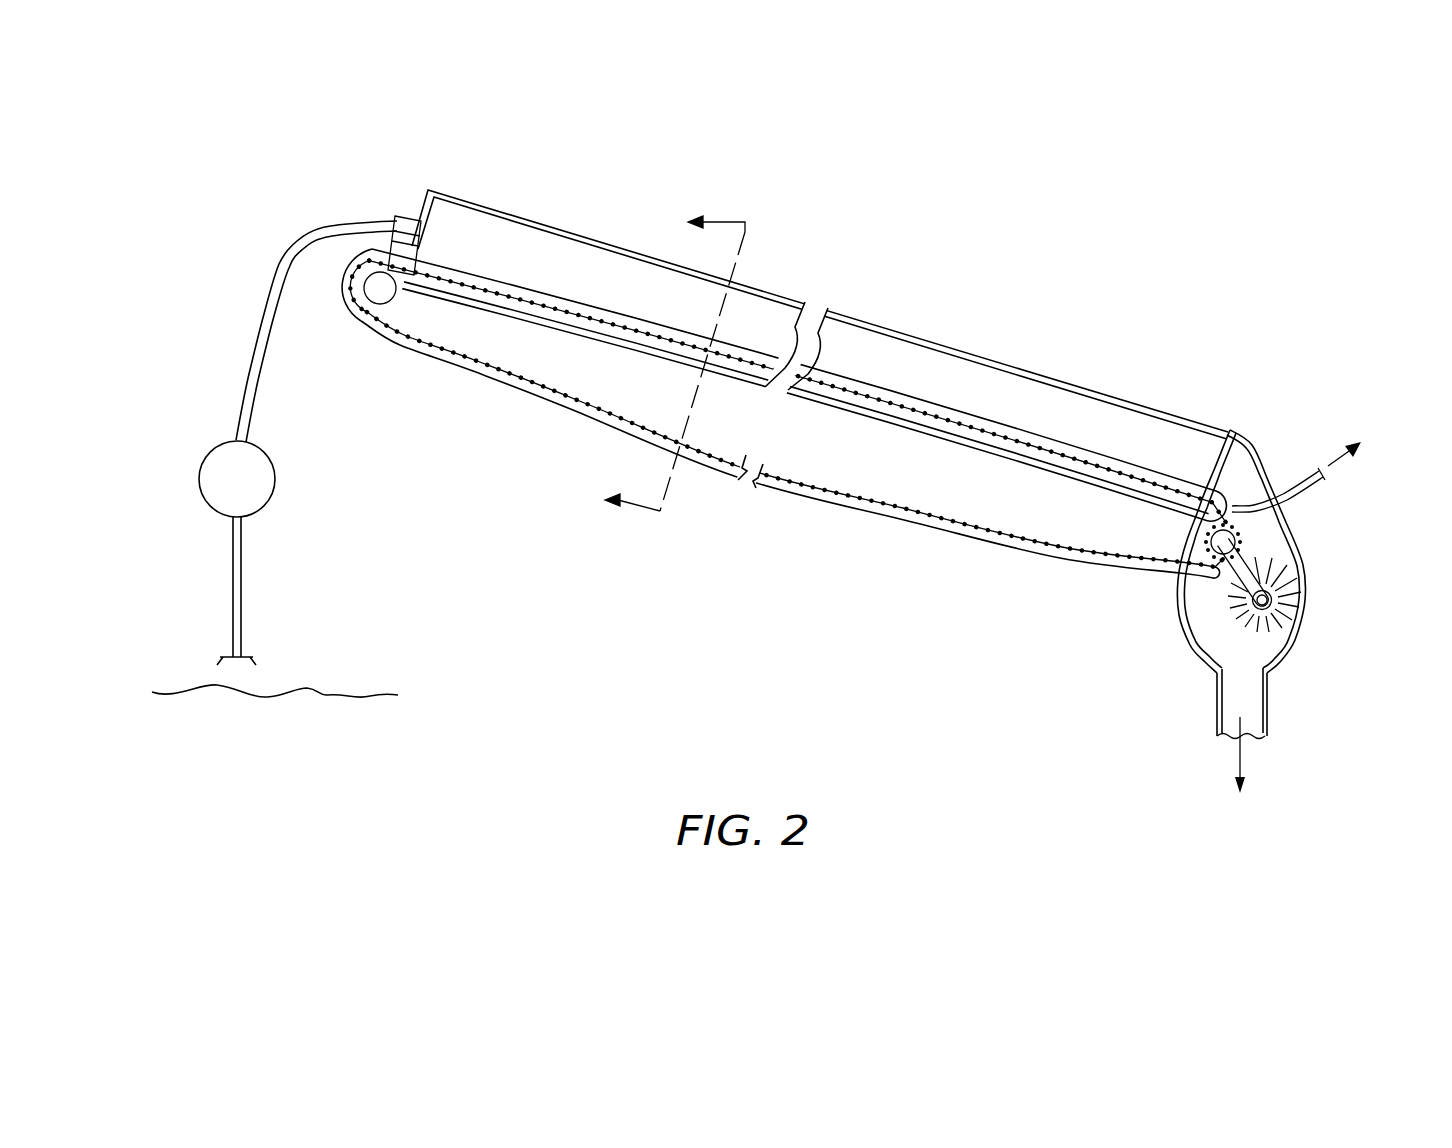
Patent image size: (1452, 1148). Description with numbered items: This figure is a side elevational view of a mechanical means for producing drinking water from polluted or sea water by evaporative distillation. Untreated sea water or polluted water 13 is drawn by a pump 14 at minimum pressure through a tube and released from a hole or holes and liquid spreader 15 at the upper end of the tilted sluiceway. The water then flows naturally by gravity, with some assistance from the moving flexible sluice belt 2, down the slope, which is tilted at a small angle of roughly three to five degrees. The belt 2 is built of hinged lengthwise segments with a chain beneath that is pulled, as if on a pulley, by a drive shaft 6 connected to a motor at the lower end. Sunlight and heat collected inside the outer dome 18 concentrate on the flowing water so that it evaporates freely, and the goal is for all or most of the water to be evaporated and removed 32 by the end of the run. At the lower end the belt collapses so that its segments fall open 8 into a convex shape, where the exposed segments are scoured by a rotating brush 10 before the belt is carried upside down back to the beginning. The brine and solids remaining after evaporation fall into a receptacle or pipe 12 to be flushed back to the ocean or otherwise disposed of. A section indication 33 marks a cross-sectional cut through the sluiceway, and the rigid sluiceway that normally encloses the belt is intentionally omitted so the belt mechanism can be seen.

The flexible sluice belt 2 is at (973, 423).
The drive shaft 6 is at (1222, 542).
The fallen-open belt segments 8 is at (1260, 542).
The rotating brush 10 is at (1300, 600).
The receptacle or pipe 12 is at (1230, 653).
The untreated sea water or polluted water 13 is at (341, 694).
The pump 14 is at (262, 480).
The liquid spreader 15 is at (405, 216).
The outer dome 18 is at (1117, 397).
The evaporated water removal 32 is at (1297, 482).
The section line 33 is at (657, 355).